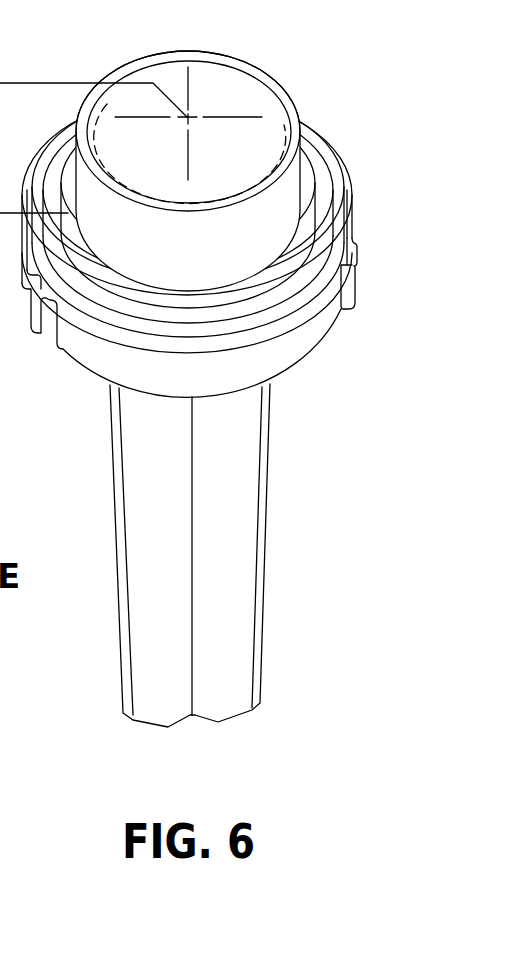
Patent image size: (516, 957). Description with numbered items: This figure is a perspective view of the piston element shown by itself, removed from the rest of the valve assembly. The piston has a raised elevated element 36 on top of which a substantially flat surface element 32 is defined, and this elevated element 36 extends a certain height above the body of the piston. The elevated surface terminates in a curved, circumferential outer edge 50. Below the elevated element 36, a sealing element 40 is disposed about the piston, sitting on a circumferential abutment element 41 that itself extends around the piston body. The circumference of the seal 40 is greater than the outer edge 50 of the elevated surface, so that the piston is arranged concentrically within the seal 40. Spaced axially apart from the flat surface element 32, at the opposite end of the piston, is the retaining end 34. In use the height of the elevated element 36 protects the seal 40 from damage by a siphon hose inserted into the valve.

The flat surface element 32 is at (250, 103).
The retaining end 34 is at (193, 717).
The elevated element 36 is at (285, 202).
The sealing element 40 is at (277, 290).
The circumferential abutment element 41 is at (278, 353).
The curved circumferential outer edge 50 is at (120, 77).